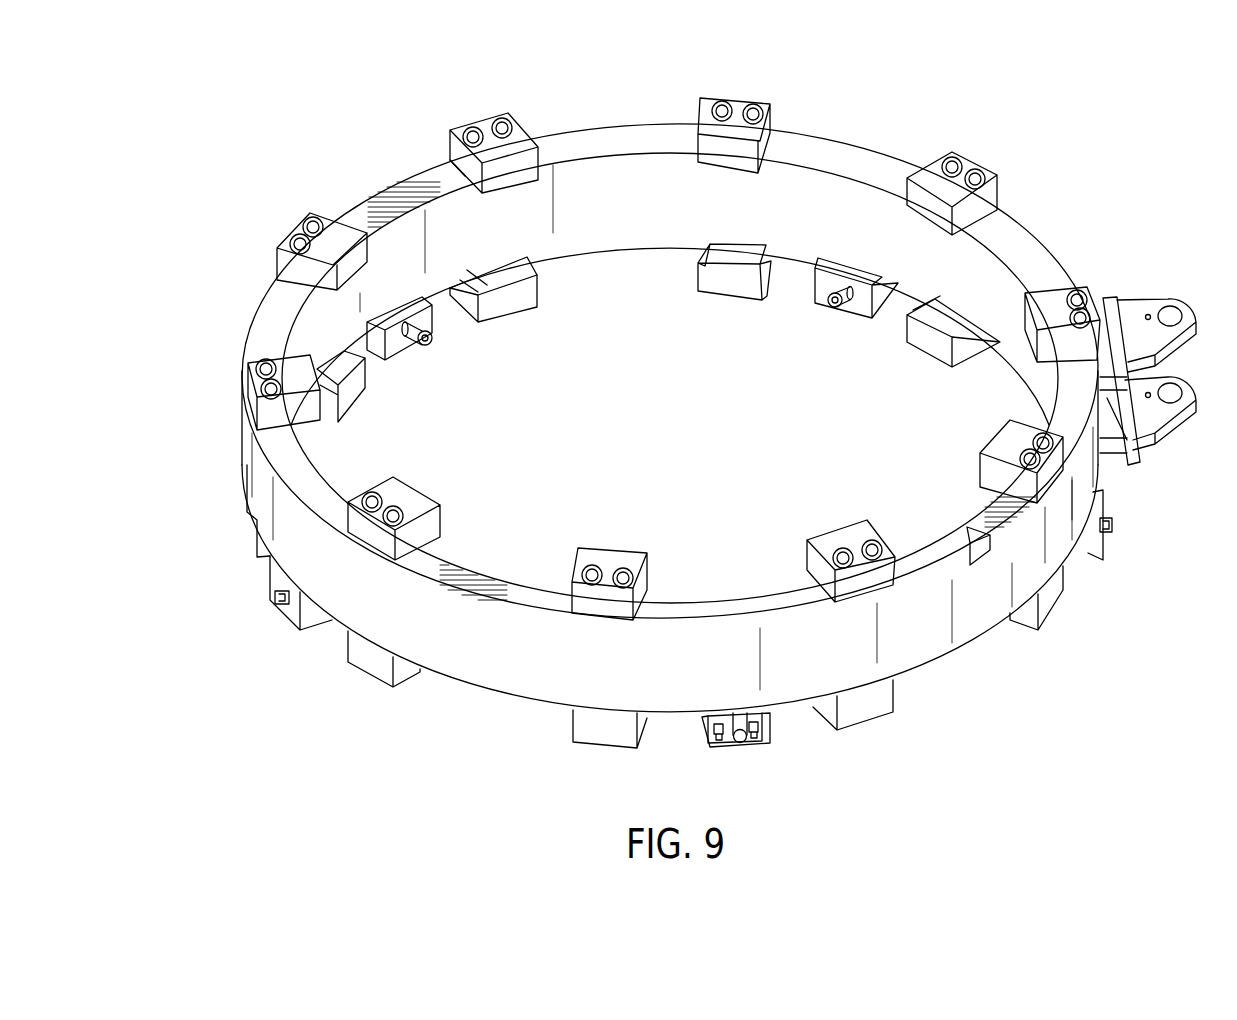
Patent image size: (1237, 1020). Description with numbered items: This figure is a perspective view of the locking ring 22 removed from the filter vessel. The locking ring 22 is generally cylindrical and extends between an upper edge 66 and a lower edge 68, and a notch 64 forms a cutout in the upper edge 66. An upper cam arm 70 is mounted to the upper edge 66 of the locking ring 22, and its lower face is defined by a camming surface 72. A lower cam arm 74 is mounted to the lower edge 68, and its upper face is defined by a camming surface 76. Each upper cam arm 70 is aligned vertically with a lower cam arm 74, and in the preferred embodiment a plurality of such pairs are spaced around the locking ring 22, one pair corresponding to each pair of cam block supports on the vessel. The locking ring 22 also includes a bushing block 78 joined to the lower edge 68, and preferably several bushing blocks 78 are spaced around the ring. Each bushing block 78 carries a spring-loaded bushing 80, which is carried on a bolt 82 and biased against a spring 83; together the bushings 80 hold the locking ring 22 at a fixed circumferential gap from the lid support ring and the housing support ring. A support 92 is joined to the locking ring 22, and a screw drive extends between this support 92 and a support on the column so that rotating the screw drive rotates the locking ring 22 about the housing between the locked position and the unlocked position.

The locking ring 22 is at (320, 132).
The notch 64 is at (960, 530).
The upper edge 66 is at (845, 157).
The lower edge 68 is at (487, 690).
The upper cam arm 70 is at (521, 138).
The camming surface 72 is at (523, 192).
The lower cam arm 74 is at (538, 290).
The camming surface 76 is at (497, 280).
The bushing block 78 is at (818, 292).
The spring-loaded bushing 80 is at (838, 305).
The bolt 82 is at (745, 738).
The spring 83 is at (738, 714).
The support 92 is at (1138, 300).